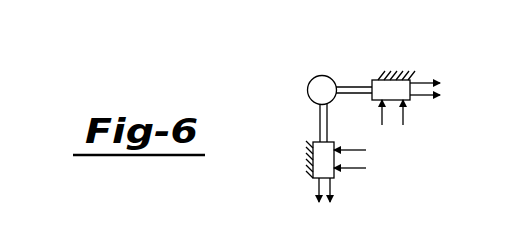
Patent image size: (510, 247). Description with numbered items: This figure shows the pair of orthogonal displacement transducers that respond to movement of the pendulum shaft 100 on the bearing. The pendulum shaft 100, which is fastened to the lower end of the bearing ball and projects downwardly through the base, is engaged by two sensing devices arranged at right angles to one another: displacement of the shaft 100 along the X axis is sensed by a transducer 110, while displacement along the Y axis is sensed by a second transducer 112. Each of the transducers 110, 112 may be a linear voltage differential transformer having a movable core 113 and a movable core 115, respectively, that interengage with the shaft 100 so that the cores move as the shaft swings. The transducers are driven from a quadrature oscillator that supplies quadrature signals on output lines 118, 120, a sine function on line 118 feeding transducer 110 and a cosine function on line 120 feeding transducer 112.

The pendulum shaft 100 is at (326, 76).
The transducer 110 is at (402, 73).
The transducer 112 is at (322, 170).
The movable core 113 is at (360, 96).
The movable core 115 is at (318, 130).
The output line 118 is at (403, 115).
The output line 120 is at (353, 168).